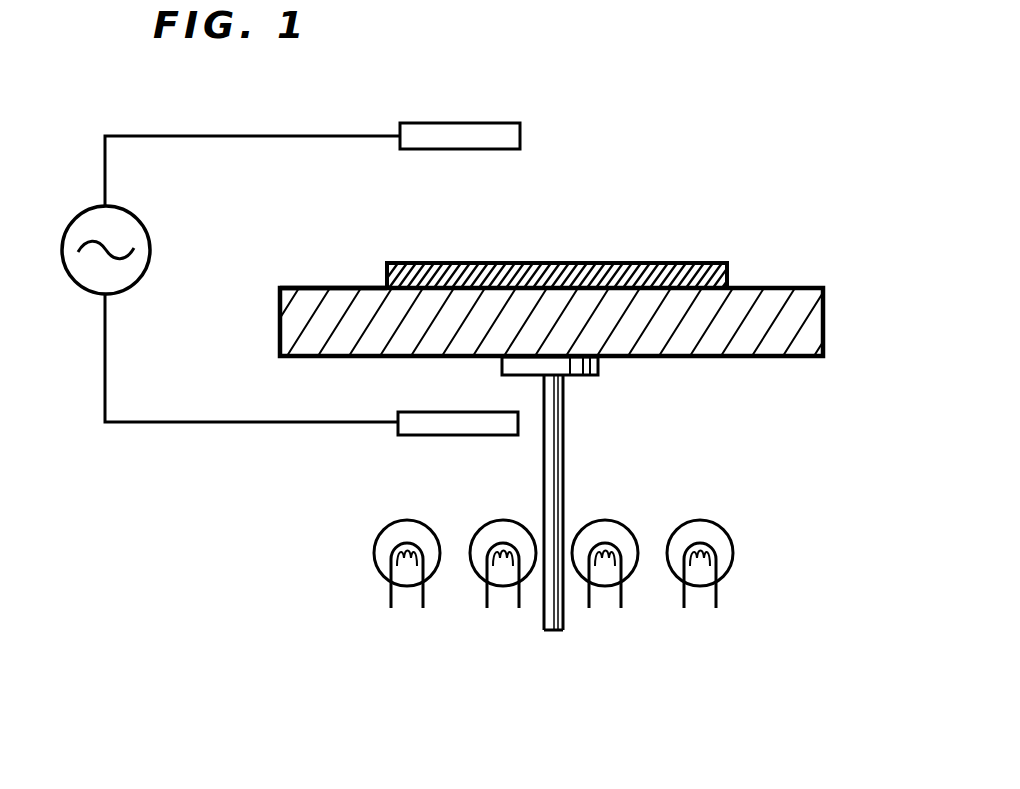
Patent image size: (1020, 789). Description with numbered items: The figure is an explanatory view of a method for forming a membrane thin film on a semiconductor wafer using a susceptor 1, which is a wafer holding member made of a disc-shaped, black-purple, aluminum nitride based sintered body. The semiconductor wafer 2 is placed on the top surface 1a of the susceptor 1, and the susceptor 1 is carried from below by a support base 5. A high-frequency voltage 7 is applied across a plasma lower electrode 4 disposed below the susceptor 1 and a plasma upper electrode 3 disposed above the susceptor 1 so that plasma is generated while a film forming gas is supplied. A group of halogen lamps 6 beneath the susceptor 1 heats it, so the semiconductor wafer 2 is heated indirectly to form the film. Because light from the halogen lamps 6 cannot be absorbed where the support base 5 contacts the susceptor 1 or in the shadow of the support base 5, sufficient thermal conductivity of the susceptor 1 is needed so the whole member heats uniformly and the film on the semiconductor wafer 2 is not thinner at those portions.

The susceptor 1 is at (797, 300).
The top surface 1a is at (311, 287).
The semiconductor wafer 2 is at (648, 263).
The plasma upper electrode 3 is at (520, 136).
The plasma lower electrode 4 is at (420, 425).
The support base 5 is at (553, 447).
The group of halogen lamps 6 is at (742, 615).
The high-frequency voltage 7 is at (118, 209).